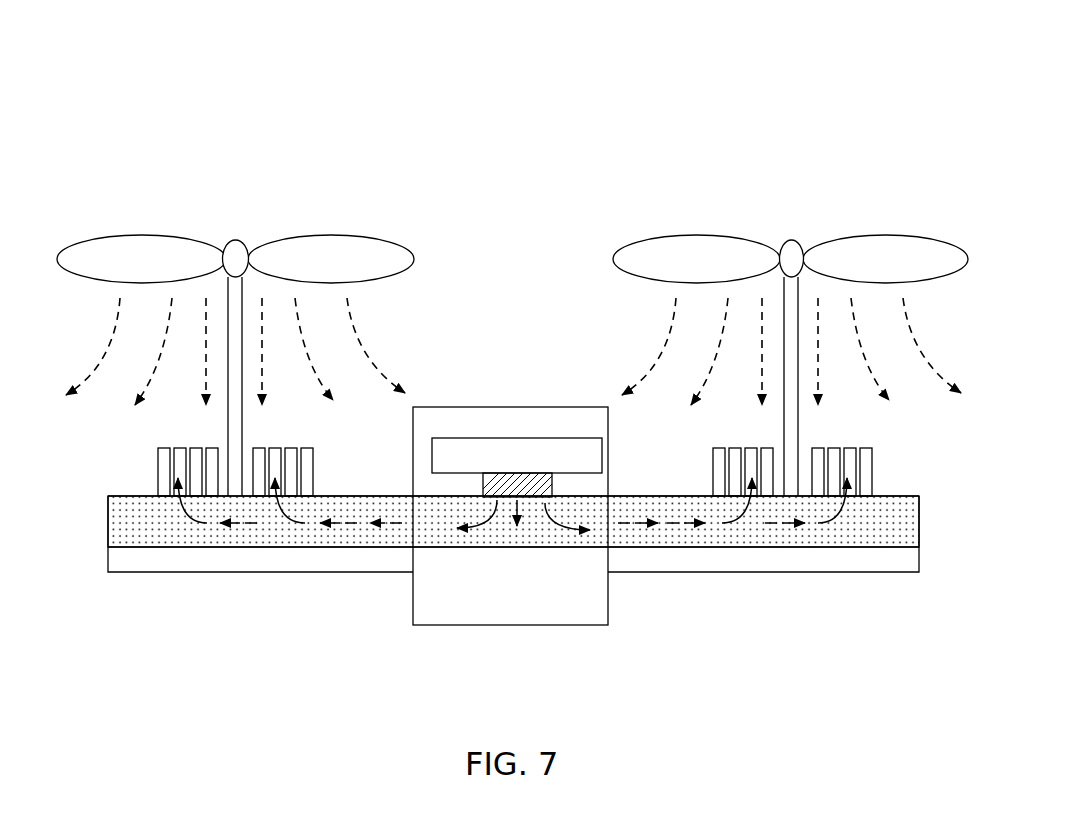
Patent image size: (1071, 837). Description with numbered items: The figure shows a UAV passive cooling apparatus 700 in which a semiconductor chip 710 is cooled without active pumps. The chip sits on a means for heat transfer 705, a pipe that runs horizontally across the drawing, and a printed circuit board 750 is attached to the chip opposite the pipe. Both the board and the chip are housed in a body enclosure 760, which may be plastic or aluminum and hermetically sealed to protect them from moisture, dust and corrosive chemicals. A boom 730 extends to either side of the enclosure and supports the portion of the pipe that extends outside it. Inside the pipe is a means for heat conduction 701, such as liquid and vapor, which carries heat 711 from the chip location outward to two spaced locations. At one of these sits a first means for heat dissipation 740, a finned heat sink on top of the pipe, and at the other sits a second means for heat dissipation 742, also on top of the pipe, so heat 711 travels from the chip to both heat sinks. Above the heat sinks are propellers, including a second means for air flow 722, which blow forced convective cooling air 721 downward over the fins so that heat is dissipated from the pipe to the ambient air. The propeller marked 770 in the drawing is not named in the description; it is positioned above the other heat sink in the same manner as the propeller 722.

The UAV passive cooling apparatus 700 is at (516, 334).
The means for heat conduction 701 is at (893, 517).
The means for heat transfer 705 is at (277, 535).
The semiconductor chip 710 is at (552, 487).
The heat 711 is at (637, 522).
The forced convective cooling air 721 is at (65, 398).
The second means for air flow 722 is at (138, 235).
The boom 730 is at (842, 562).
The first means for heat dissipation 740 is at (873, 463).
The second means for heat dissipation 742 is at (162, 477).
The printed circuit board 750 is at (563, 438).
The body enclosure 760 is at (503, 407).
The fan 770 is at (695, 235).